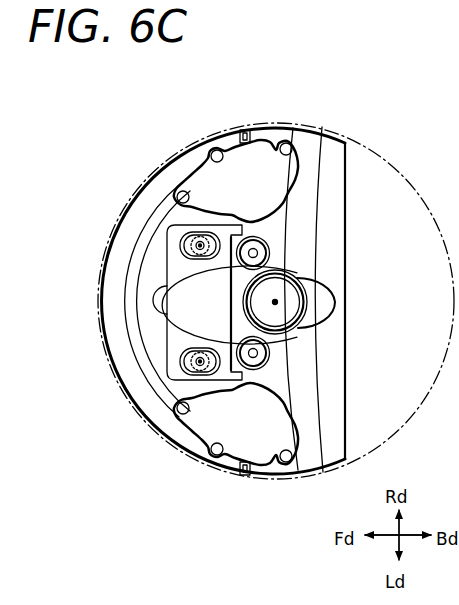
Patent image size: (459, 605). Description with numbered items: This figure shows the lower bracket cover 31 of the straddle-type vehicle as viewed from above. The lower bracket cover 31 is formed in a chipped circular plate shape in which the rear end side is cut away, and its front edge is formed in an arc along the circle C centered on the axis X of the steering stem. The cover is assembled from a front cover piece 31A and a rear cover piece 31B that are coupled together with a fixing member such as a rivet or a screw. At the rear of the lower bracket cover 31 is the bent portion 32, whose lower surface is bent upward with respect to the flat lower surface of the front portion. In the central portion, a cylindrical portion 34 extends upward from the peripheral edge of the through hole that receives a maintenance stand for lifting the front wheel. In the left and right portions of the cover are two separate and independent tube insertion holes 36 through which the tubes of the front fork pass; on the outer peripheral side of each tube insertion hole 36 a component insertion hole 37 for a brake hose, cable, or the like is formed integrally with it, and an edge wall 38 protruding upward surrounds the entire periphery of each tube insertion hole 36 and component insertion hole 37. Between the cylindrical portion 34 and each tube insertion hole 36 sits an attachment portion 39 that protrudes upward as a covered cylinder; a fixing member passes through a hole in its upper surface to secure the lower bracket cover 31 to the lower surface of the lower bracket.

The lower bracket cover 31 is at (207, 268).
The front cover piece 31A is at (138, 212).
The rear cover piece 31B is at (305, 144).
The bent portion 32 is at (322, 351).
The cylindrical portion 34 is at (310, 303).
The tube insertion hole 36 is at (212, 152).
The component insertion hole 37 is at (277, 146).
The edge wall 38 is at (182, 188).
The attachment portion 39 is at (264, 243).
The circle C is at (384, 152).
The axis X is at (276, 302).